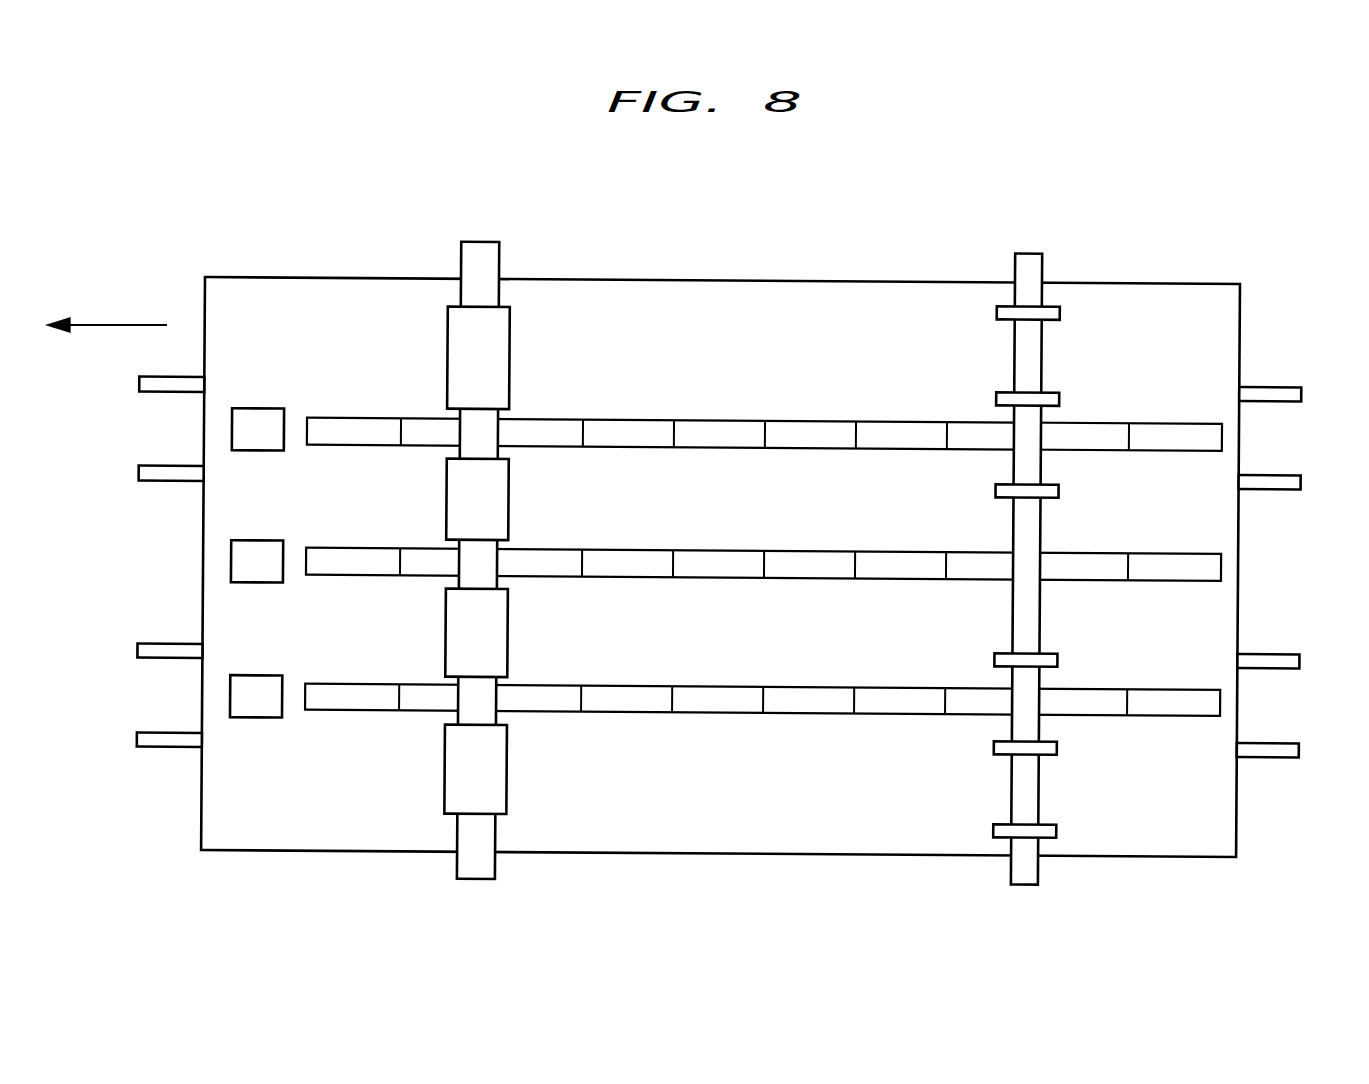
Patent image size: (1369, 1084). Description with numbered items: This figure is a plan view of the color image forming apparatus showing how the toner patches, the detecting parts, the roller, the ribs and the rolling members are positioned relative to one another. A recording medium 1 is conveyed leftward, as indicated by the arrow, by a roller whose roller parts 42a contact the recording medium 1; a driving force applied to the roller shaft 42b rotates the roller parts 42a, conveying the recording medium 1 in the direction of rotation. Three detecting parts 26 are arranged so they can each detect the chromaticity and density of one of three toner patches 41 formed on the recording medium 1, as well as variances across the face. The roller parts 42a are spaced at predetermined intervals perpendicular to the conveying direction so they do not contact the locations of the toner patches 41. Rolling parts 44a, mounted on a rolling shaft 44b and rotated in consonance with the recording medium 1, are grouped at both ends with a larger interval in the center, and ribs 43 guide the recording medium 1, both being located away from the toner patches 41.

The recording medium 1 is at (1150, 850).
The detecting part 26 is at (269, 408).
The toner patch 41 is at (1172, 417).
The roller part 42a is at (504, 349).
The roller shaft 42b is at (490, 238).
The rib 43 is at (1300, 386).
The rolling part 44a is at (1058, 306).
The rolling shaft 44b is at (1030, 246).